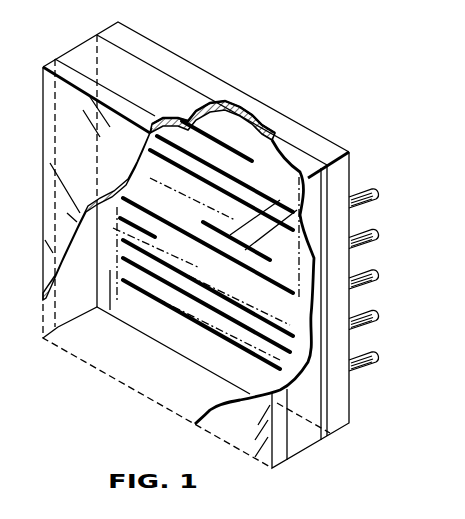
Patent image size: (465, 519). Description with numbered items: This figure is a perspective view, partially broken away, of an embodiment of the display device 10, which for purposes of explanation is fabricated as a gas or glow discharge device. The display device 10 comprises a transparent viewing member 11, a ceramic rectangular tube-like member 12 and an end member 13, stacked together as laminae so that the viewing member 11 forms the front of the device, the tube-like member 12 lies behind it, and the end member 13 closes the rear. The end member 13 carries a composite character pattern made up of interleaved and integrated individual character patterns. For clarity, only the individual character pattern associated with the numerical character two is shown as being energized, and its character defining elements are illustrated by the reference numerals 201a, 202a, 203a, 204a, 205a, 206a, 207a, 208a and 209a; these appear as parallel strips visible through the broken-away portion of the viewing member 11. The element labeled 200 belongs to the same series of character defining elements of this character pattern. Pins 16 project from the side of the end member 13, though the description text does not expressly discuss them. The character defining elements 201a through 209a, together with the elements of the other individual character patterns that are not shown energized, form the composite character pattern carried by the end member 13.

The display device 10 is at (210, 74).
The transparent viewing member 11 is at (43, 67).
The ceramic rectangular tube-like member 12 is at (80, 43).
The end member 13 is at (160, 46).
The terminal pins 16 is at (365, 193).
The conductor strip 200 is at (243, 146).
The character defining element 201a is at (257, 186).
The character defining element 202a is at (270, 213).
The character defining element 203a is at (303, 260).
The character defining element 204a is at (287, 261).
The character defining element 205a is at (83, 262).
The character defining element 206a is at (112, 308).
The character defining element 207a is at (259, 310).
The character defining element 208a is at (300, 350).
The character defining element 209a is at (170, 310).